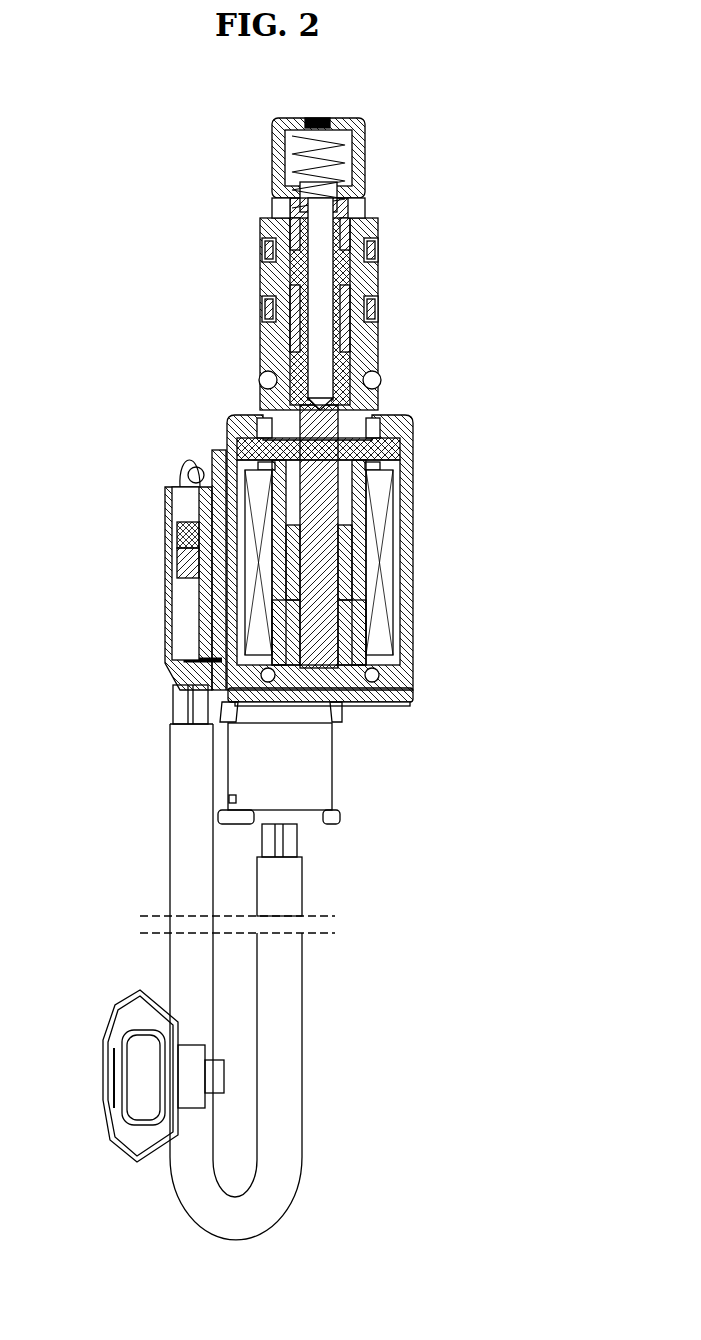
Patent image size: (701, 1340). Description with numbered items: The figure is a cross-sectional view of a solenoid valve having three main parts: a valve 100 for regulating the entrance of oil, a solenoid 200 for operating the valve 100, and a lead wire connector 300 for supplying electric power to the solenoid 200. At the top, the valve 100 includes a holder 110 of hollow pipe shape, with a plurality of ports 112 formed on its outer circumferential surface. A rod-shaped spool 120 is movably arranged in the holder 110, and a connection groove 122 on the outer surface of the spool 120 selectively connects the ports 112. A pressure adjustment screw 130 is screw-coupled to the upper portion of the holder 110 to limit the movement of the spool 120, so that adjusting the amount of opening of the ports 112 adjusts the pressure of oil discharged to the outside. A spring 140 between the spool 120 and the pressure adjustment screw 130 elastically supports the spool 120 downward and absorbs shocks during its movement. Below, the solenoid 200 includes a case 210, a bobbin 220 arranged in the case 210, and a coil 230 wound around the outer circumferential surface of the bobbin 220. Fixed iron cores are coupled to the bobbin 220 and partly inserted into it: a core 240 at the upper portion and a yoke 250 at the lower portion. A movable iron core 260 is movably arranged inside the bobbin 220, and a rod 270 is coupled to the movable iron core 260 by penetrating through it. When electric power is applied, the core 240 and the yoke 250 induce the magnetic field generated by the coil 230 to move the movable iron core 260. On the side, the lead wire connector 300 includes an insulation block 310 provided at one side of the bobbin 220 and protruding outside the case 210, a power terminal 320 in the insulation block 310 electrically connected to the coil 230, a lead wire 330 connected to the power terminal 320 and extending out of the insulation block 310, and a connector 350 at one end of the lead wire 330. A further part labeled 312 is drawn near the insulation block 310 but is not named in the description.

The valve 100 is at (370, 126).
The holder 110 is at (380, 300).
The ports 112 is at (358, 210).
The spool 120 is at (285, 272).
The connection groove 122 is at (270, 245).
The pressure adjustment screw 130 is at (362, 150).
The spring 140 is at (292, 172).
The solenoid 200 is at (420, 418).
The case 210 is at (407, 632).
The bobbin 220 is at (405, 528).
The coil 230 is at (395, 495).
The core 240 is at (398, 452).
The yoke 250 is at (340, 695).
The movable iron core 260 is at (400, 598).
The rod 270 is at (395, 560).
The lead wire connector 300 is at (305, 1050).
The insulation block 310 is at (168, 572).
The terminal holder 312 is at (168, 505).
The power terminal 320 is at (190, 537).
The lead wire 330 is at (185, 707).
The connector 350 is at (332, 785).